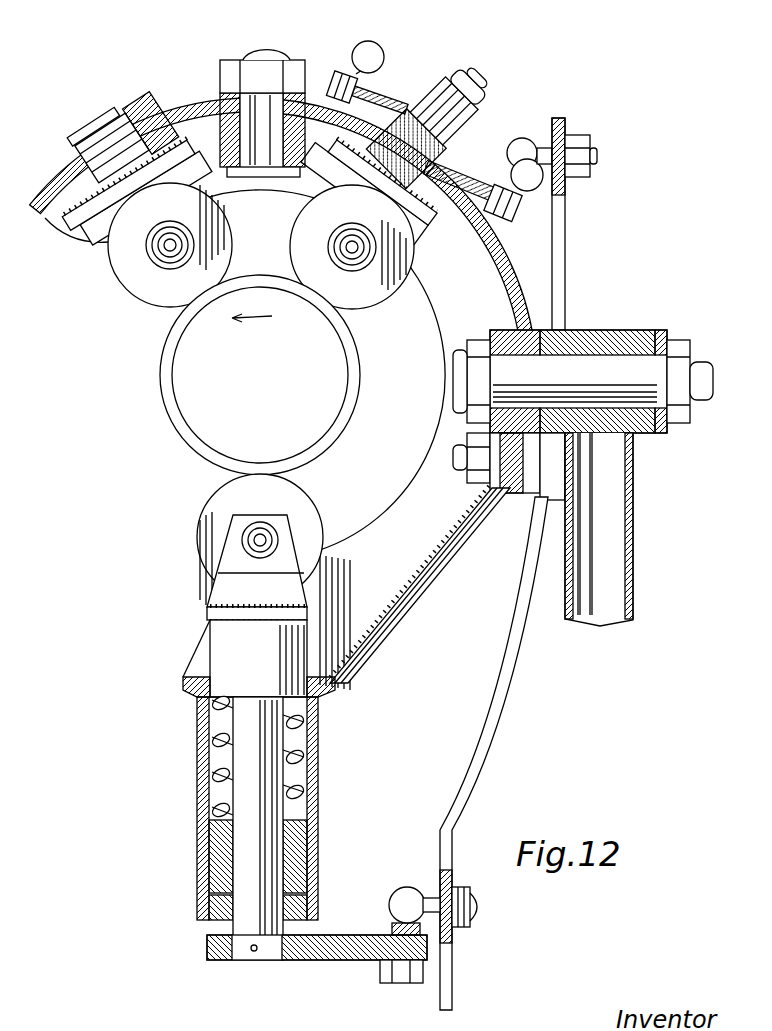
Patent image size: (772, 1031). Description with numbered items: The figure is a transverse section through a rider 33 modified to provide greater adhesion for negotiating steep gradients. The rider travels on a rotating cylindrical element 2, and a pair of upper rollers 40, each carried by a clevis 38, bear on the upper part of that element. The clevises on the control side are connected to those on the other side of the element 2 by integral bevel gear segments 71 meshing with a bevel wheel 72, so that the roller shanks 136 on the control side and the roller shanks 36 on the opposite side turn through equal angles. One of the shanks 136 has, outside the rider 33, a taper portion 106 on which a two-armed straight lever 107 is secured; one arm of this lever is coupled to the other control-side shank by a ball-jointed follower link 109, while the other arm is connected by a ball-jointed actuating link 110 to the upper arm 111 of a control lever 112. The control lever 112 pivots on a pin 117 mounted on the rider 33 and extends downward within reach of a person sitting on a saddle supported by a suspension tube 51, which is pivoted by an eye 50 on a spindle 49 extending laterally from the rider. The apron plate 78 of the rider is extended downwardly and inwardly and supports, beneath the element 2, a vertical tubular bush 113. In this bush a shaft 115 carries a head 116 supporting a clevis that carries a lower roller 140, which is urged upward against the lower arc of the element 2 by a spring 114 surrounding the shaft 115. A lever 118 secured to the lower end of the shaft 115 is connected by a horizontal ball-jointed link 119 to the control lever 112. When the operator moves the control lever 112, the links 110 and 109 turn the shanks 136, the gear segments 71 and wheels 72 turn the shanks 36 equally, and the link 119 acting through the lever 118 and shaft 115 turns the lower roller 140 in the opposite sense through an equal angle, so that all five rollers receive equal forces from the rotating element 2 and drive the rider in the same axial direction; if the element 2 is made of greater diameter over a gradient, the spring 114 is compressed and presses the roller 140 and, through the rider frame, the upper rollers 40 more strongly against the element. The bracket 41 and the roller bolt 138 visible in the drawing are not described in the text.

The cylindrical element 2 is at (362, 373).
The rider 33 is at (512, 286).
The roller shanks 36 is at (153, 120).
The clevis 38 is at (150, 240).
The rollers 40 is at (310, 247).
The roller bracket 41 is at (333, 163).
The spindle 49 is at (583, 381).
The eye 50 is at (604, 330).
The suspension tube 51 is at (634, 517).
The bevel gear segment 71 is at (217, 135).
The bevel wheel 72 is at (228, 180).
The apron plate 78 is at (393, 633).
The taper portion 106 is at (433, 110).
The two-armed straight lever 107 is at (480, 180).
The ball-jointed follower link 109 is at (354, 50).
The ball-jointed actuating link 110 is at (548, 122).
The upper arm 111 is at (565, 253).
The control lever 112 is at (490, 719).
The vertical tubular bush 113 is at (317, 786).
The spring 114 is at (317, 734).
The shaft 115 is at (273, 841).
The head 116 is at (233, 640).
The pin 117 is at (457, 477).
The lever 118 is at (324, 961).
The horizontal ball-jointed link 119 is at (404, 894).
The shanks 136 is at (483, 83).
The roller bolt 138 is at (277, 557).
The roller 140 is at (297, 505).